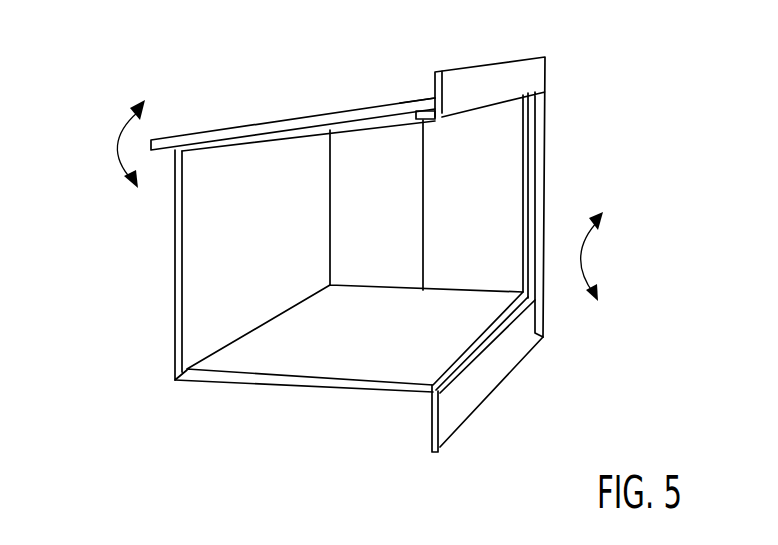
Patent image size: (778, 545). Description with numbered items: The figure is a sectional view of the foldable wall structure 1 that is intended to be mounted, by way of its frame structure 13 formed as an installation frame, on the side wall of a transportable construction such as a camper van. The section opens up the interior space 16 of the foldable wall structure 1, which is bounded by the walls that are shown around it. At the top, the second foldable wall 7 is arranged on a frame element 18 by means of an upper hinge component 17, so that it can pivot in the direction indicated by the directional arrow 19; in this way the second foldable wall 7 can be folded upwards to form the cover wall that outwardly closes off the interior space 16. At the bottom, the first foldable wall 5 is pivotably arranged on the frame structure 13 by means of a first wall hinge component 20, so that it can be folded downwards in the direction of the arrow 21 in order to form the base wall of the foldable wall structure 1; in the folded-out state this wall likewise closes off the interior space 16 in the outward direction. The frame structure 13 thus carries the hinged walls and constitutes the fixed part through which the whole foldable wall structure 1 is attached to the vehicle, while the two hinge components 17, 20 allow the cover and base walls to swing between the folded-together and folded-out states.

The foldable wall structure 1 is at (95, 293).
The first foldable wall 5 is at (375, 342).
The second foldable wall 7 is at (237, 126).
The frame structure 13 is at (536, 76).
The interior space 16 is at (390, 220).
The upper hinge component 17 is at (402, 97).
The frame element 18 is at (427, 97).
The directional arrow 19 is at (117, 146).
The first wall hinge component 20 is at (477, 348).
The arrow 21 is at (578, 255).